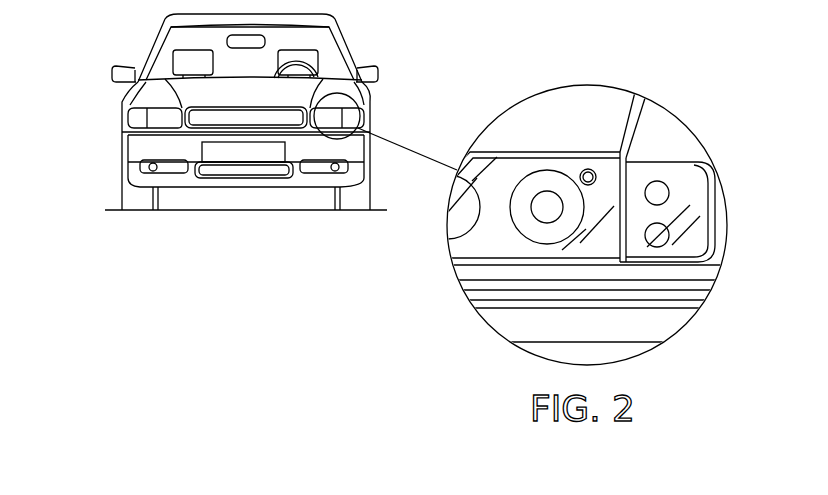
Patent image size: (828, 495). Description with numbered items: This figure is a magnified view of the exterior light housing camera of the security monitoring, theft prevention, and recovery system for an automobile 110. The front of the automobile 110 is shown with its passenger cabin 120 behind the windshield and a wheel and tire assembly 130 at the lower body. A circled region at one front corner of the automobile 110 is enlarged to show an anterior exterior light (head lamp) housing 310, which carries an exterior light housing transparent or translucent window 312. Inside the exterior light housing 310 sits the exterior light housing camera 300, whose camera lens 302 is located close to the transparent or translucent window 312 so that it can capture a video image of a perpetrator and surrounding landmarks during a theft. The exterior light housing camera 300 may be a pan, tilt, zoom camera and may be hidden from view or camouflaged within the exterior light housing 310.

The automobile 110 is at (338, 43).
The passenger cabin 120 is at (168, 47).
The wheel and tire assembly 130 is at (137, 200).
The exterior light housing camera 300 is at (586, 169).
The camera lens 302 is at (593, 172).
The exterior light housing 310 is at (473, 167).
The exterior light housing transparent or translucent window 312 is at (487, 238).